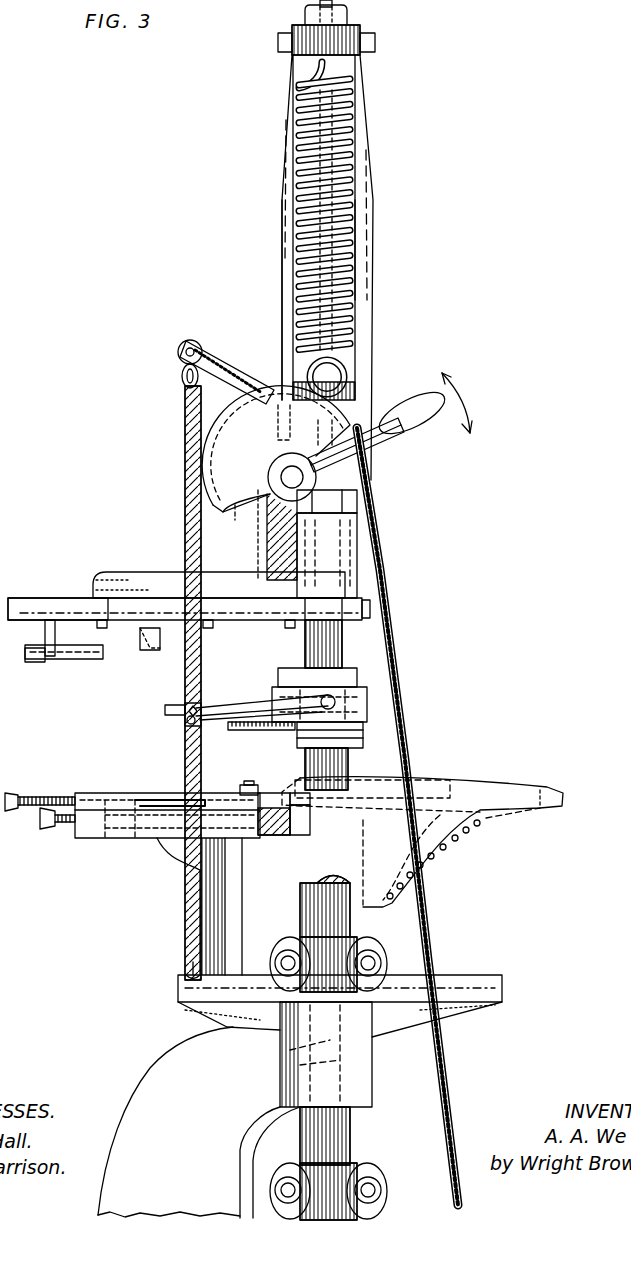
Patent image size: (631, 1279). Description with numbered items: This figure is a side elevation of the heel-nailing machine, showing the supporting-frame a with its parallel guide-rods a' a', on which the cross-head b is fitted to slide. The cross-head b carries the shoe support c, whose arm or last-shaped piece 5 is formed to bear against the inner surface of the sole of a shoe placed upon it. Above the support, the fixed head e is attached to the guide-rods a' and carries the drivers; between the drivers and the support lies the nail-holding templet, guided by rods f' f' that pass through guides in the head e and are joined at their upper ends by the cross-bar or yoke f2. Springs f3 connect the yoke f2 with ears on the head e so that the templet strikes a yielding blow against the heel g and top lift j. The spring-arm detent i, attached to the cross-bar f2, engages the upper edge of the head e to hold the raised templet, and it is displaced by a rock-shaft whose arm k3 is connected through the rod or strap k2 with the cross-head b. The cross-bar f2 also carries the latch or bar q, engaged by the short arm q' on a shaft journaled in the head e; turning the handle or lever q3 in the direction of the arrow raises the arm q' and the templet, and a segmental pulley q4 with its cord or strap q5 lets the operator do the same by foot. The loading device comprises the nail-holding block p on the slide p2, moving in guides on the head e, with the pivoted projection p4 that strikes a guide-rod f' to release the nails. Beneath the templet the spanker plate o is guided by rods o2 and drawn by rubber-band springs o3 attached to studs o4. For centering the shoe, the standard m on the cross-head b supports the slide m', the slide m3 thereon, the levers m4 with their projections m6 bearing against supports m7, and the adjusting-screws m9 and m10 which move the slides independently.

The cross-bar or yoke f2 is at (358, 26).
The spring-arm detent i is at (370, 266).
The latch or bar q is at (258, 300).
The templet springs f3 is at (372, 213).
The templet guide-rods f' is at (356, 364).
The rock-shaft arm k3 is at (221, 357).
The rod or strap k2 is at (192, 543).
The short arm q' is at (276, 483).
The segmental pulley q4 is at (237, 468).
The handle or lever q3 is at (390, 433).
The fixed head e is at (363, 498).
The guide-rods a' is at (226, 864).
The loading slide p2 is at (60, 605).
The nail-holding block p is at (67, 628).
The arm or projection p4 is at (147, 634).
The cord or strap q5 is at (397, 636).
The springs o3 is at (260, 703).
The studs o4 is at (338, 700).
The slide or spanker plate o is at (182, 703).
The guide-rods o2 is at (165, 712).
The top lift j is at (256, 728).
The heel g is at (365, 734).
The slide m3 is at (147, 795).
The adjusting-screw m10 is at (35, 795).
The adjusting-screw m9 is at (65, 823).
The studs or supports m7 is at (253, 793).
The projections m6 is at (355, 778).
The slide m' is at (282, 829).
The levers m4 is at (293, 857).
The standard m is at (185, 906).
The arm or last-shaped piece 5 is at (437, 792).
The shoe support c is at (480, 843).
The last support column z is at (357, 922).
The cross-head b is at (322, 1067).
The supporting-frame a is at (242, 1123).